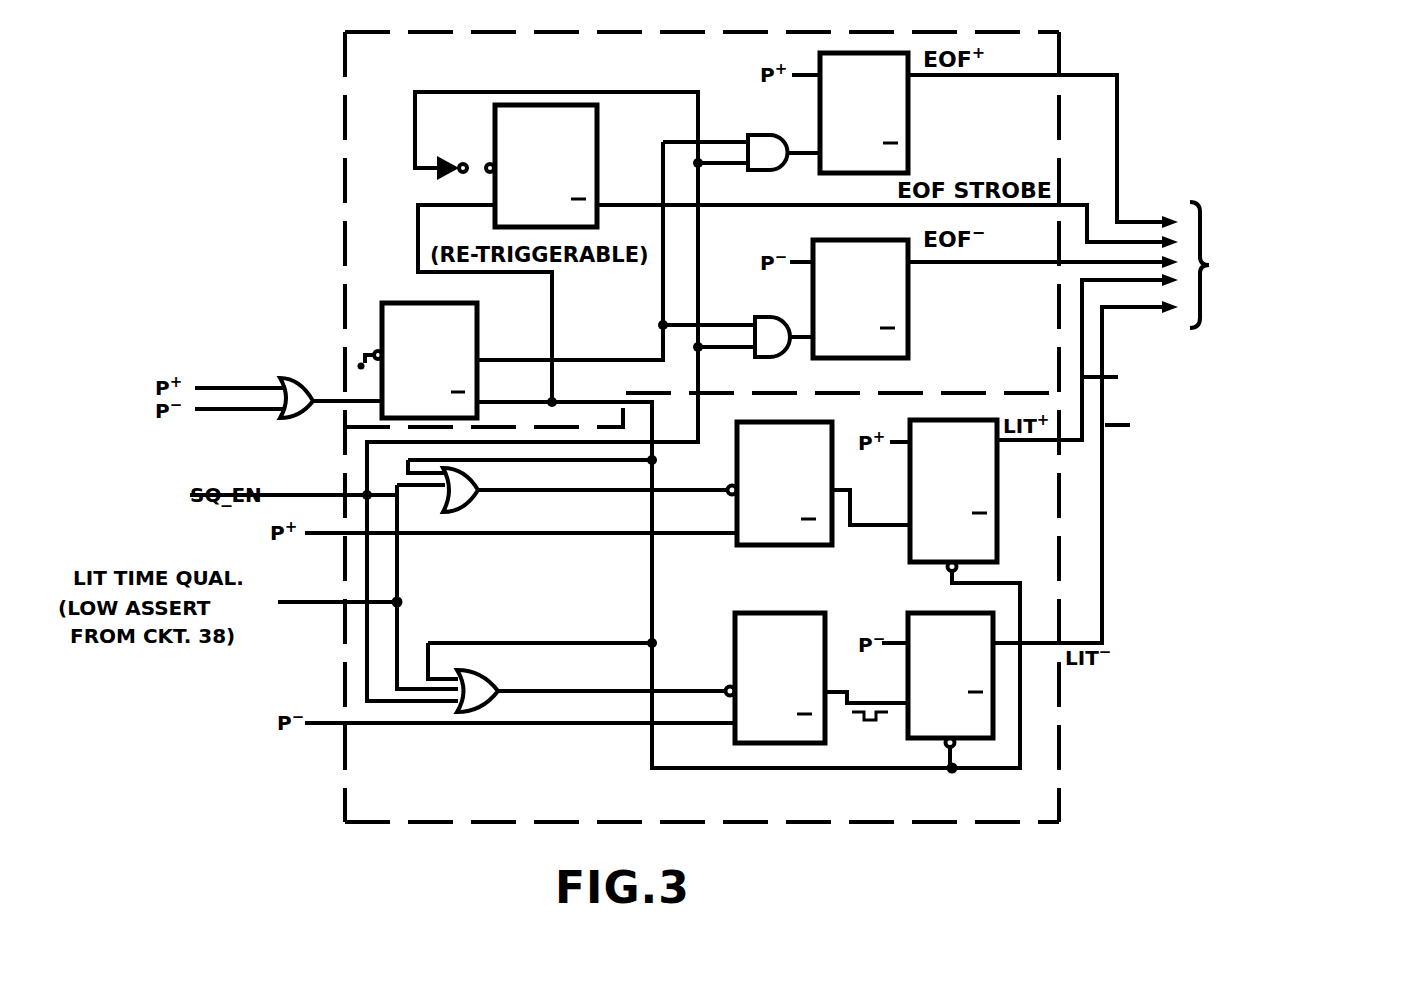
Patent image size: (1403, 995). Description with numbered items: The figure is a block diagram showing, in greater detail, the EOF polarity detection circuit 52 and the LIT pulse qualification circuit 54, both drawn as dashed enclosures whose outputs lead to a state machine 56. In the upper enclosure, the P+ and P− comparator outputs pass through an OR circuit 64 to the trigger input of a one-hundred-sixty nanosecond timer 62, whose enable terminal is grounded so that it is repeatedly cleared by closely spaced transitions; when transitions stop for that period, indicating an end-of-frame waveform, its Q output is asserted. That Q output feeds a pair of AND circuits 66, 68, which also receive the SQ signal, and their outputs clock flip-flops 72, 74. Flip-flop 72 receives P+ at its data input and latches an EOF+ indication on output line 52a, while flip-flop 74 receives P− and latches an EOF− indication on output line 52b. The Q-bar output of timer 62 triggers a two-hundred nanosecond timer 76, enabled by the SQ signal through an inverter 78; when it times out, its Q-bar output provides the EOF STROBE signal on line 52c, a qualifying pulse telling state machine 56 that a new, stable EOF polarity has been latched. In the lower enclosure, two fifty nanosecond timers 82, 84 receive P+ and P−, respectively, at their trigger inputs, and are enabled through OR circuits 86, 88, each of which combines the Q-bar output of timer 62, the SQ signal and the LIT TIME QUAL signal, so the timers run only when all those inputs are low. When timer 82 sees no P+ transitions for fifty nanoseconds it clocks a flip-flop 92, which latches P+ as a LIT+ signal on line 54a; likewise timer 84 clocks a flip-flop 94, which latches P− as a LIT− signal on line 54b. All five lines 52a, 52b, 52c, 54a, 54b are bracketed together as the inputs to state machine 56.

The EOF polarity detection circuit 52 is at (343, 197).
The LIT pulse qualification circuit 54 is at (343, 783).
The state machine 56 is at (1288, 265).
The 160 ns timer 62 is at (410, 303).
The OR circuit 64 is at (303, 413).
The AND circuit 66 is at (746, 140).
The AND circuit 68 is at (771, 317).
The flip-flop 72 is at (903, 108).
The flip-flop 74 is at (908, 323).
The 200 ns timer 76 is at (598, 140).
The inverter 78 is at (455, 157).
The 50 ns timer 82 is at (735, 544).
The 50 ns timer 84 is at (768, 613).
The OR circuit 86 is at (468, 502).
The OR circuit 88 is at (495, 680).
The flip-flop 92 is at (906, 482).
The flip-flop 94 is at (915, 612).
The output line 52a is at (1118, 143).
The output line 52b is at (1118, 262).
The output line 52c is at (1092, 215).
The line 54a is at (1128, 360).
The line 54b is at (1140, 475).